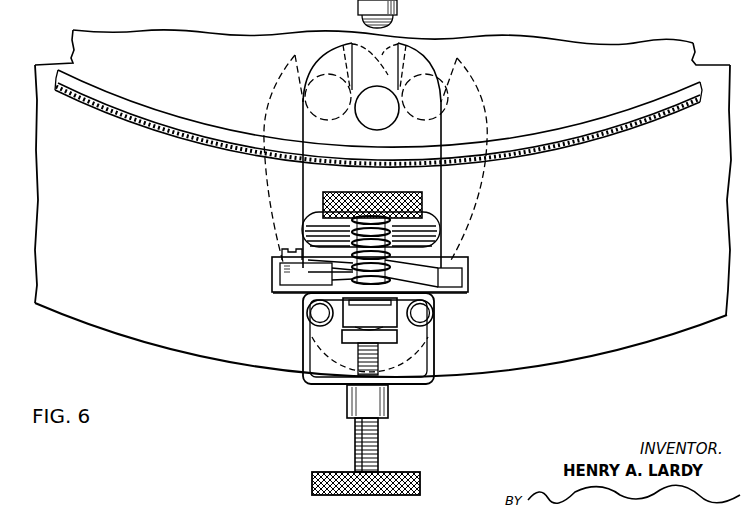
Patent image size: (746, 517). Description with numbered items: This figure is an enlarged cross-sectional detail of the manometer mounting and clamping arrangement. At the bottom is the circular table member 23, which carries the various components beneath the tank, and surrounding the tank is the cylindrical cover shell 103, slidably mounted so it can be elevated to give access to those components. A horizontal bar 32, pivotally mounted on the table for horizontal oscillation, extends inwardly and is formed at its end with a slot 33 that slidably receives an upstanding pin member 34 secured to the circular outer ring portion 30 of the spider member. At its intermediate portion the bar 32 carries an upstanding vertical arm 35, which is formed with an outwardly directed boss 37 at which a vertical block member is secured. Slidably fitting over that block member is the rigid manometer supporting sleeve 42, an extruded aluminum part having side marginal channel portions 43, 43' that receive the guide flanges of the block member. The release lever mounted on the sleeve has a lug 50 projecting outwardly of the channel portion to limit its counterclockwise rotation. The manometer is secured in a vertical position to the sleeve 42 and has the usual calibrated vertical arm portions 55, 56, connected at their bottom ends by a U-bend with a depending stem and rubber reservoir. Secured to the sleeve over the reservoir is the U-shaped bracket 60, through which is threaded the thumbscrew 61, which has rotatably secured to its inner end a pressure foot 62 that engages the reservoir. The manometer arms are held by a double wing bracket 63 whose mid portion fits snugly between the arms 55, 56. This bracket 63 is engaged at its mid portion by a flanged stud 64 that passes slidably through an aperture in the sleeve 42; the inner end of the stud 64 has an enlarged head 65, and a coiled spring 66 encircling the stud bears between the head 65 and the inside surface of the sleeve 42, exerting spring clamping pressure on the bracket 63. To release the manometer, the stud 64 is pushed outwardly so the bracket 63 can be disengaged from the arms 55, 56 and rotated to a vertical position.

The circular table member 23 is at (565, 350).
The circular outer ring portion 30 is at (678, 58).
The horizontal bar 32 is at (443, 188).
The slot 33 is at (405, 60).
The pin member 34 is at (383, 94).
The vertical arm 35 is at (313, 218).
The boss 37 is at (440, 232).
The manometer supporting sleeve 42 is at (326, 293).
The side marginal channel portion 43 is at (355, 268).
The side marginal channel portion 43' is at (470, 269).
The lug 50 is at (272, 277).
The calibrated vertical arm portion 55 is at (307, 307).
The calibrated vertical arm portion 56 is at (437, 315).
The U-shaped bracket 60 is at (328, 377).
The thumbscrew 61 is at (378, 445).
The pressure foot 62 is at (377, 340).
The double wing bracket 63 is at (433, 333).
The flanged stud 64 is at (353, 227).
The enlarged head 65 is at (357, 197).
The coiled spring 66 is at (357, 233).
The cylindrical cover shell 103 is at (618, 135).